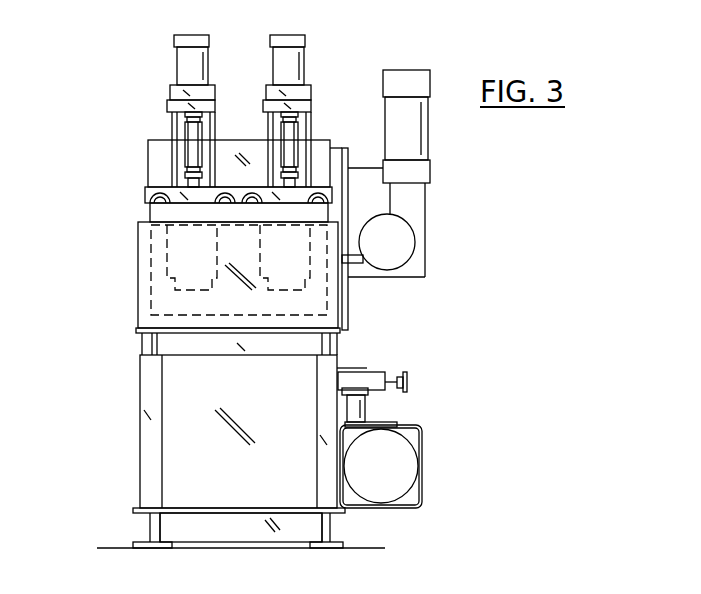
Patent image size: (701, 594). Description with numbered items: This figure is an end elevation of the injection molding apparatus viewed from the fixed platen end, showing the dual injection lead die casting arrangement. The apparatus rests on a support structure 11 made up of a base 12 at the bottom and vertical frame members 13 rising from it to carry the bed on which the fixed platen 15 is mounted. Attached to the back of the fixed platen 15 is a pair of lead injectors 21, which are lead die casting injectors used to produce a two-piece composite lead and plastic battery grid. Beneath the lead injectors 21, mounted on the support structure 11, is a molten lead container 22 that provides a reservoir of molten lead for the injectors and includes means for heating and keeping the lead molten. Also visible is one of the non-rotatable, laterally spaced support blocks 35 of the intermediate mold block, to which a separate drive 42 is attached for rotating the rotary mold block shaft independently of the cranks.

The support structure 11 is at (140, 425).
The base 12 is at (148, 520).
The vertical frame members 13 is at (140, 372).
The fixed platen 15 is at (150, 156).
The lead injectors 21 is at (265, 90).
The molten lead container 22 is at (320, 302).
The support blocks 35 is at (336, 148).
The drive 42 is at (415, 203).